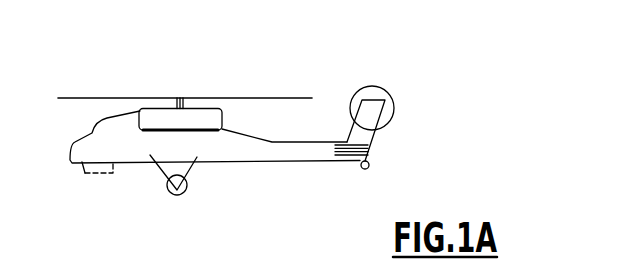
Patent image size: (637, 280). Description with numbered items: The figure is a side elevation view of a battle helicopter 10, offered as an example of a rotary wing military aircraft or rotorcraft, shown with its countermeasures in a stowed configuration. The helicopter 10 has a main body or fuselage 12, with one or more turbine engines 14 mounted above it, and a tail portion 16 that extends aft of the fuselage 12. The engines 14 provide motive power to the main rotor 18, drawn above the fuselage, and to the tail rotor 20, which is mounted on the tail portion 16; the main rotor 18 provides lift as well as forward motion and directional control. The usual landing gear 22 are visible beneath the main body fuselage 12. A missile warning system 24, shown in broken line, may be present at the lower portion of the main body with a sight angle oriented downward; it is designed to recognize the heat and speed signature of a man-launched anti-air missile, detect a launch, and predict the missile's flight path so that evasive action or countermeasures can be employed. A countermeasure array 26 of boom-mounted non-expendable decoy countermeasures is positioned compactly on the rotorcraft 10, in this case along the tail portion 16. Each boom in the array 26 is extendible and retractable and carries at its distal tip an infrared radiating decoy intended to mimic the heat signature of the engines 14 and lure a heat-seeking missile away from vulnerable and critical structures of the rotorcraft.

The battle helicopter 10 is at (293, 198).
The fuselage 12 is at (146, 165).
The turbine engine 14 is at (223, 123).
The tail portion 16 is at (313, 165).
The main rotor 18 is at (250, 86).
The tail rotor 20 is at (370, 92).
The landing gear 22 is at (184, 195).
The missile warning system 24 is at (85, 174).
The countermeasure array 26 is at (373, 153).